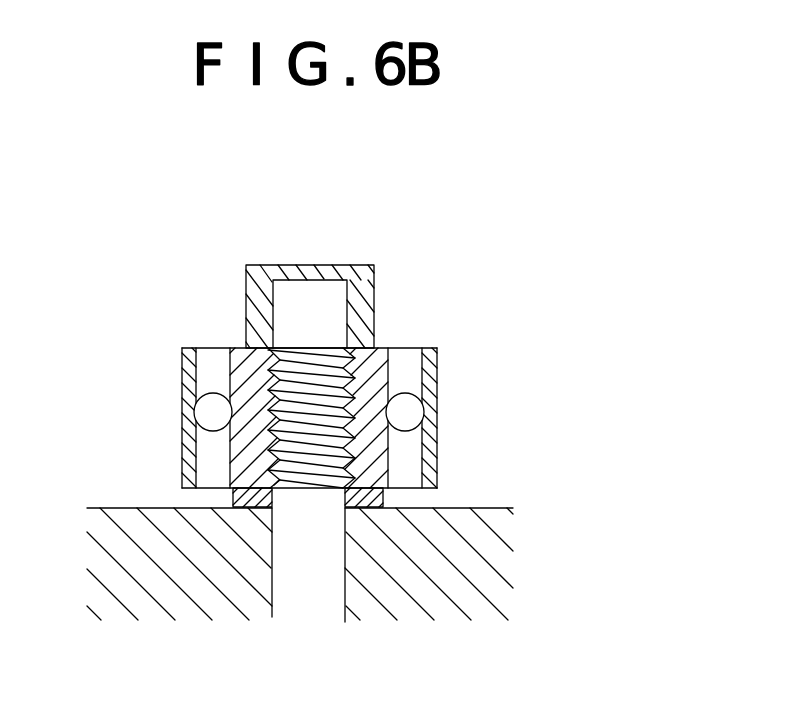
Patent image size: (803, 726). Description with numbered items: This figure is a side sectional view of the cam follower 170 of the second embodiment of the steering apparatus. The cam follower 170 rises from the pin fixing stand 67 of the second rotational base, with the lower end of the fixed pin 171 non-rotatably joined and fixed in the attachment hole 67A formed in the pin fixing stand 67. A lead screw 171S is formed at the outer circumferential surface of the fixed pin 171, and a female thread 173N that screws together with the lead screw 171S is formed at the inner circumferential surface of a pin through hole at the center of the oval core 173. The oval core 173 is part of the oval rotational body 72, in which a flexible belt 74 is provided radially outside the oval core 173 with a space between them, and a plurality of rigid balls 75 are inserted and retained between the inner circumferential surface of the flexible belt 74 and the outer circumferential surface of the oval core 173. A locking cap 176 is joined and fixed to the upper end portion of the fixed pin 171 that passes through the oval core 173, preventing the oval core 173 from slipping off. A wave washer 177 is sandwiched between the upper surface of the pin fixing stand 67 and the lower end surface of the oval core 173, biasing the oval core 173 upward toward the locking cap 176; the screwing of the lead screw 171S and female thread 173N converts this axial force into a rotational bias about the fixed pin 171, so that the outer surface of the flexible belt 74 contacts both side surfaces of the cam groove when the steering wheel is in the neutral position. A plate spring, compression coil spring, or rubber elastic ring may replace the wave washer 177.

The cam follower 170 is at (527, 158).
The fixed pin 171 is at (293, 317).
The lead screw 171S is at (313, 392).
The locking cap 176 is at (259, 277).
The oval rotational body 72 is at (550, 348).
The flexible belt 74 is at (432, 378).
The rigid balls 75 is at (405, 415).
The oval core 173 is at (378, 455).
The female thread 173N is at (278, 383).
The wave washer 177 is at (360, 508).
The pin fixing stand 67 is at (130, 523).
The attachment hole 67A is at (272, 543).